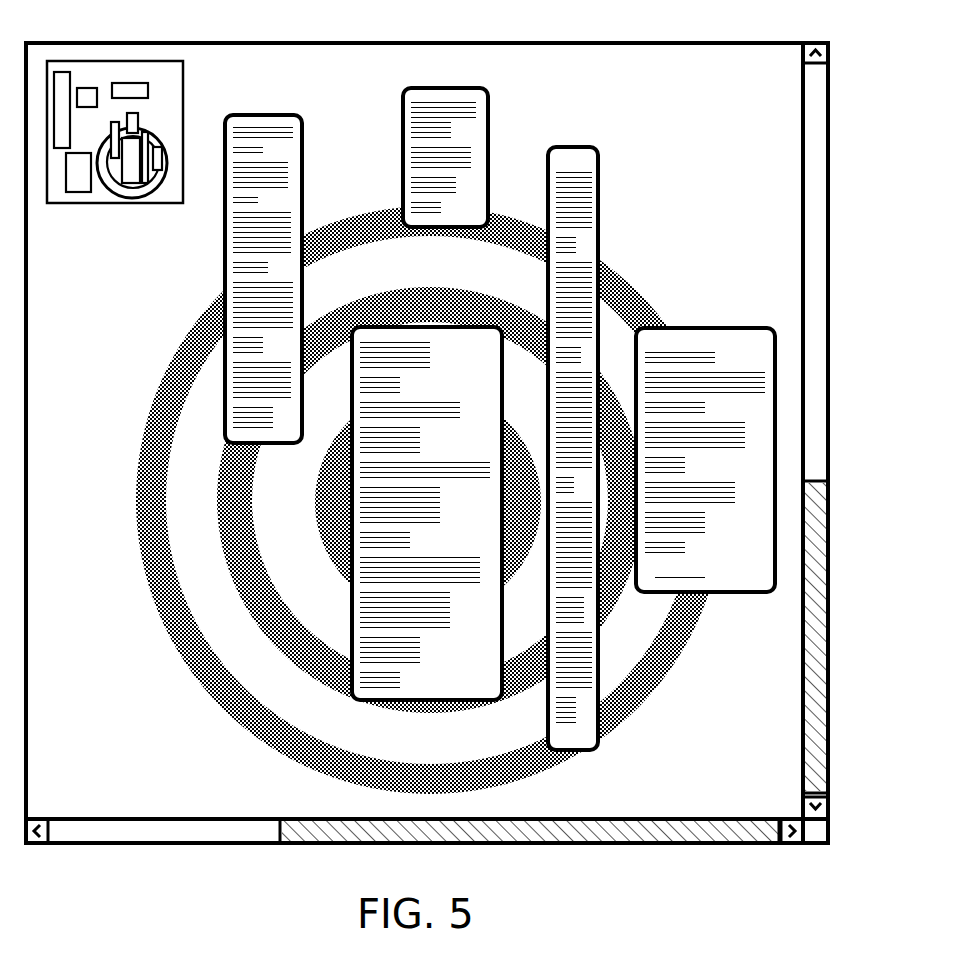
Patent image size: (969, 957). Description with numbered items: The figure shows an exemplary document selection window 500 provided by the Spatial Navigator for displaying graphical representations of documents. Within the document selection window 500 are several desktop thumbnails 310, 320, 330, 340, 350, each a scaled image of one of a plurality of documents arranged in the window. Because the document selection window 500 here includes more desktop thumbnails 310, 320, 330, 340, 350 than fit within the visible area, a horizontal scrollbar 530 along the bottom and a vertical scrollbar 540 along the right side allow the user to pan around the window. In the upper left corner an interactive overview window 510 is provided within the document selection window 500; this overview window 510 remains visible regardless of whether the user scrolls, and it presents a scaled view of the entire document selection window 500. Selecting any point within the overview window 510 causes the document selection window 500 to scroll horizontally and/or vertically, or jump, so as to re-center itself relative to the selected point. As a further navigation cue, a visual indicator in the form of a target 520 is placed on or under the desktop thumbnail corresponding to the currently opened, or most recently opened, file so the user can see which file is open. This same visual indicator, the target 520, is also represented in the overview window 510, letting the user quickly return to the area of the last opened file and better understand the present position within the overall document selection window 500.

The document selection window 500 is at (645, 43).
The overview window 510 is at (105, 203).
The target 520 is at (197, 683).
The horizontal scrollbar 530 is at (215, 843).
The vertical scrollbar 540 is at (828, 178).
The desktop thumbnail 310 is at (475, 88).
The desktop thumbnail 320 is at (265, 115).
The desktop thumbnail 330 is at (583, 147).
The desktop thumbnail 340 is at (400, 700).
The desktop thumbnail 350 is at (730, 592).